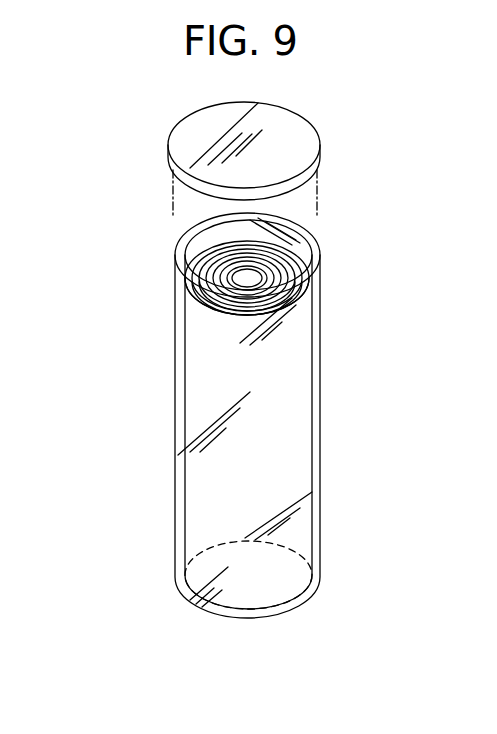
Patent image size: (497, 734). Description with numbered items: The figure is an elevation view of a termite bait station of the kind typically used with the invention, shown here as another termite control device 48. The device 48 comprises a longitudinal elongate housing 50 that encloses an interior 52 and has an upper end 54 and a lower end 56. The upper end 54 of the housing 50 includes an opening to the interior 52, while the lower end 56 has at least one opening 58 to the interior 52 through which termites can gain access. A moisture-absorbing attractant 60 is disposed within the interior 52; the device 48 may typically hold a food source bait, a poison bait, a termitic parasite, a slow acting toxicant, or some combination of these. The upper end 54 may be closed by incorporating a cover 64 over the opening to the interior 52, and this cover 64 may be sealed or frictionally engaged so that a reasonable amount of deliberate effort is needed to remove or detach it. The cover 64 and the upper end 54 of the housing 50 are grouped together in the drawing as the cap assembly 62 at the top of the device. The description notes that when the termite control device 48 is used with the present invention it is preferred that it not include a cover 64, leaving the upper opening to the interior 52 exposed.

The termite control device 48 is at (116, 289).
The longitudinal elongate housing 50 is at (175, 408).
The interior 52 is at (217, 350).
The upper end 54 is at (207, 253).
The lower end 56 is at (220, 615).
The opening 58 is at (255, 633).
The moisture-absorbing attractant 60 is at (242, 473).
The cap assembly 62 is at (337, 110).
The cover 64 is at (212, 137).